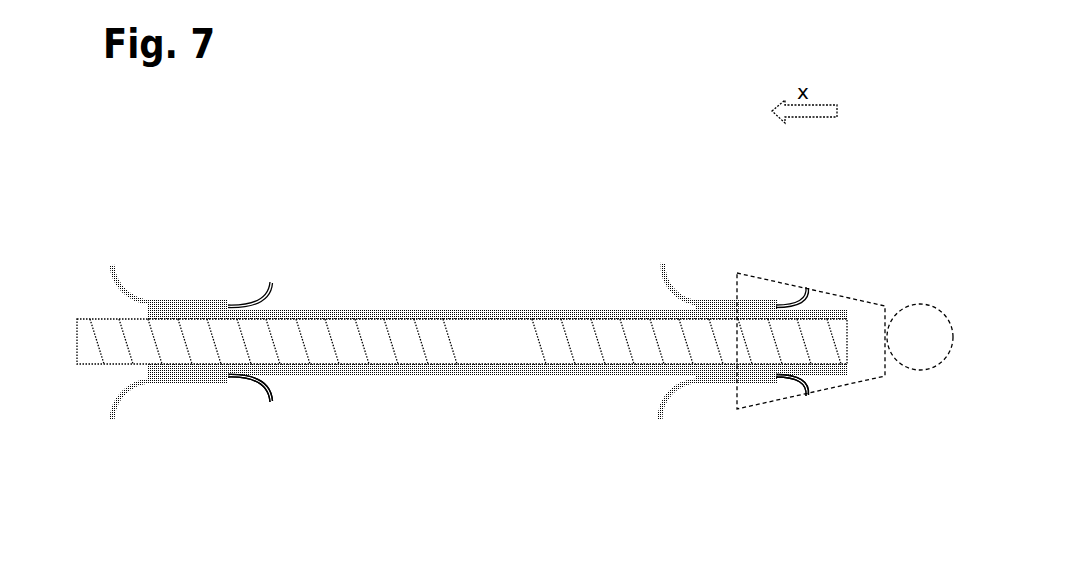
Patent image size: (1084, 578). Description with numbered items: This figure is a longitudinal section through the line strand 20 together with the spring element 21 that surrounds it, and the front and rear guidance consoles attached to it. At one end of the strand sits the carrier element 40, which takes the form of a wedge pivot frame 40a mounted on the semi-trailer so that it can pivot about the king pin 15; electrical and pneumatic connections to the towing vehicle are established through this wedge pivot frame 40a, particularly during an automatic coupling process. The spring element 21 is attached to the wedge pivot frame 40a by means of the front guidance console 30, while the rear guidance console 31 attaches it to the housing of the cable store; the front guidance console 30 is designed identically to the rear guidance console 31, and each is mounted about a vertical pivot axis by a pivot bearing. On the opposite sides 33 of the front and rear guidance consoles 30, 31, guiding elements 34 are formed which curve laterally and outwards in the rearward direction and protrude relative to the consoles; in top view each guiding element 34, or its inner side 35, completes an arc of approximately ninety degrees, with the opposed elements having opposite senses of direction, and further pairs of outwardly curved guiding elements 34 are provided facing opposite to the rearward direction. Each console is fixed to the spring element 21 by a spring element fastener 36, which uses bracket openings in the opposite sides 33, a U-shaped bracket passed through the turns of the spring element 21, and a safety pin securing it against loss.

The king pin 15 is at (912, 302).
The line strand 20 is at (473, 353).
The spring element 21 is at (428, 308).
The front guidance console 30 is at (724, 303).
The rear guidance console 31 is at (216, 302).
The opposite sides 33 is at (175, 299).
The guiding elements 34 is at (113, 267).
The inner side 35 is at (117, 292).
The spring element fastener 36 is at (205, 380).
The carrier element 40 is at (811, 284).
The wedge pivot frame 40a is at (822, 290).